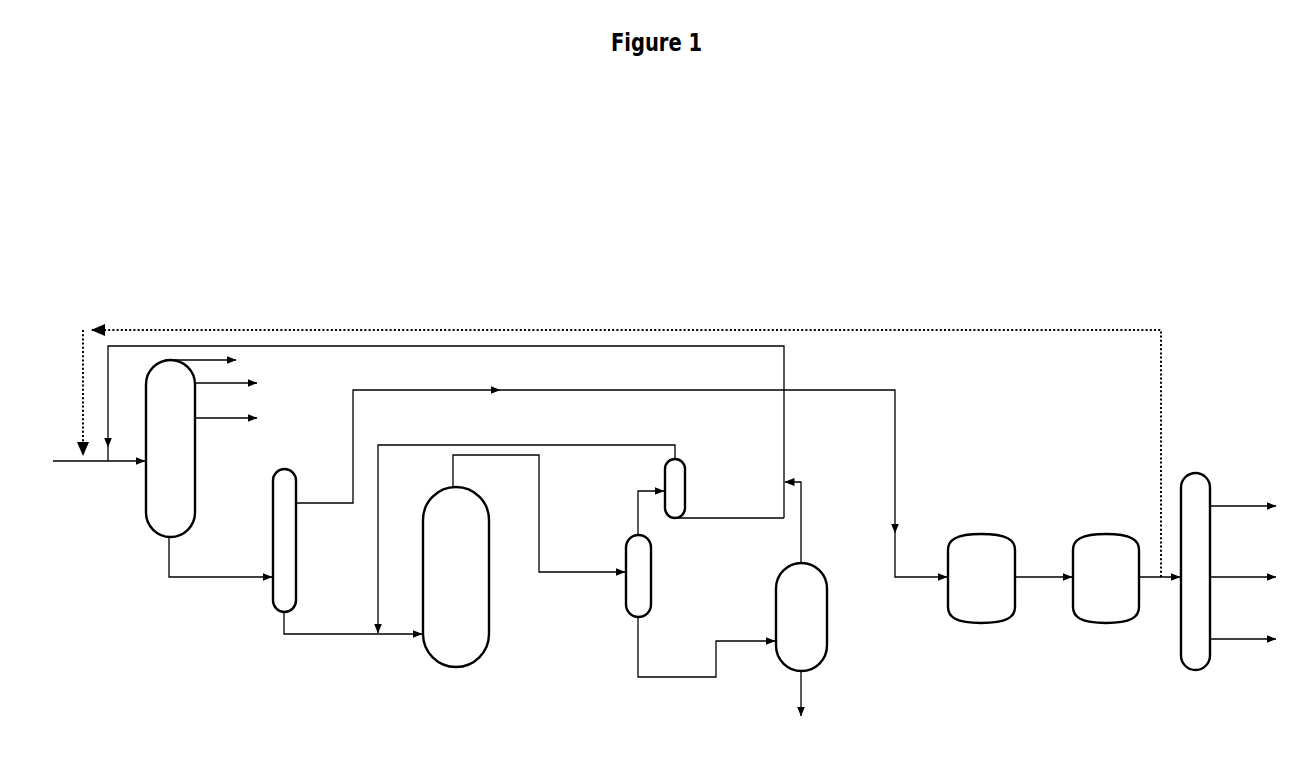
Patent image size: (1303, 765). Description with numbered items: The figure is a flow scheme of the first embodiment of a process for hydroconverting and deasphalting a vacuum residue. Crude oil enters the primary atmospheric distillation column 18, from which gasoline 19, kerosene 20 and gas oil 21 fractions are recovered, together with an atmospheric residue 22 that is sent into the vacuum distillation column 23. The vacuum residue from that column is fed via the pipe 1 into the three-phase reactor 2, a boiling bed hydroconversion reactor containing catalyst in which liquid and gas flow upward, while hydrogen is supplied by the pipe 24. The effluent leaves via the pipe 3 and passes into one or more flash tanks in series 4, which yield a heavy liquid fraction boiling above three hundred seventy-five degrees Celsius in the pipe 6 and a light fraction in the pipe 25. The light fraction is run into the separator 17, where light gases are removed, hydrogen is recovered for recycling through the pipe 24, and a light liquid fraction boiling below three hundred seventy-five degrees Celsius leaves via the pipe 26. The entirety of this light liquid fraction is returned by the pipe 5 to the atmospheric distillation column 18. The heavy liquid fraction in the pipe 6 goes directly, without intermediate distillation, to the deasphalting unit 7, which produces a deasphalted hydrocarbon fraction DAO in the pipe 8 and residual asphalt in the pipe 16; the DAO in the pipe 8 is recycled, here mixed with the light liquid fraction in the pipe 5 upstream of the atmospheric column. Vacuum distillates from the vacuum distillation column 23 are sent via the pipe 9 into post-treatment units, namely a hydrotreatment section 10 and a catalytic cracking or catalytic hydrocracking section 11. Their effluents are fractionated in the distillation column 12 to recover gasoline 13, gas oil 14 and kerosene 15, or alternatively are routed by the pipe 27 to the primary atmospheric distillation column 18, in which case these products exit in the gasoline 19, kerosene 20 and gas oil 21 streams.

The pipe 1 is at (353, 622).
The three-phase reactor 2 is at (456, 577).
The pipe 3 is at (539, 513).
The flash tanks 4 is at (638, 576).
The pipe 5 is at (446, 432).
The pipe 6 is at (706, 647).
The deasphalting unit 7 is at (801, 617).
The pipe 8 is at (809, 522).
The pipe 9 is at (621, 483).
The hydrotreatment section 10 is at (1010, 578).
The catalytic cracking or catalytic hydrocracking section 11 is at (1126, 578).
The distillation column 12 is at (1204, 560).
The gasoline fraction 13 is at (1243, 493).
The gas oil fraction 14 is at (1243, 564).
The kerosene fraction 15 is at (1243, 626).
The pipe 16 is at (829, 693).
The separator 17 is at (698, 486).
The primary atmospheric distillation column 18 is at (170, 448).
The gasoline fraction 19 is at (231, 362).
The kerosene fraction 20 is at (248, 391).
The gas oil fraction 21 is at (248, 431).
The atmospheric residue 22 is at (220, 557).
The vacuum distillation column 23 is at (307, 540).
The pipe 24 is at (526, 528).
The pipe 25 is at (633, 512).
The pipe 26 is at (730, 532).
The pipe 27 is at (622, 453).